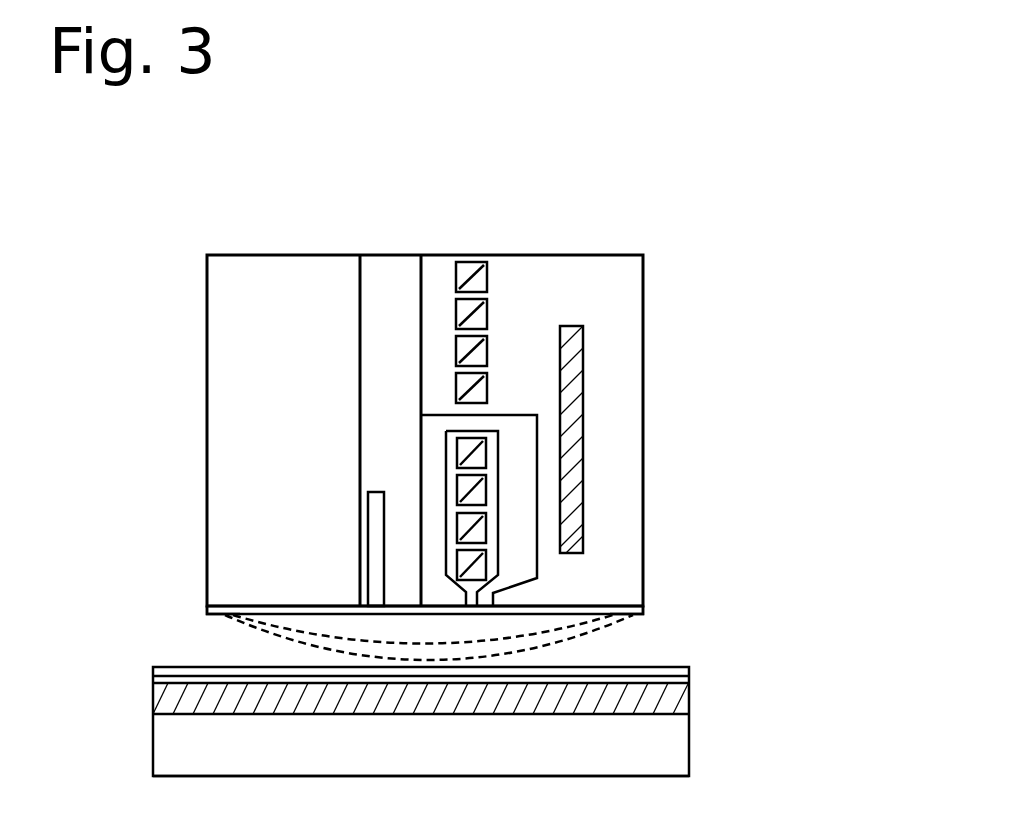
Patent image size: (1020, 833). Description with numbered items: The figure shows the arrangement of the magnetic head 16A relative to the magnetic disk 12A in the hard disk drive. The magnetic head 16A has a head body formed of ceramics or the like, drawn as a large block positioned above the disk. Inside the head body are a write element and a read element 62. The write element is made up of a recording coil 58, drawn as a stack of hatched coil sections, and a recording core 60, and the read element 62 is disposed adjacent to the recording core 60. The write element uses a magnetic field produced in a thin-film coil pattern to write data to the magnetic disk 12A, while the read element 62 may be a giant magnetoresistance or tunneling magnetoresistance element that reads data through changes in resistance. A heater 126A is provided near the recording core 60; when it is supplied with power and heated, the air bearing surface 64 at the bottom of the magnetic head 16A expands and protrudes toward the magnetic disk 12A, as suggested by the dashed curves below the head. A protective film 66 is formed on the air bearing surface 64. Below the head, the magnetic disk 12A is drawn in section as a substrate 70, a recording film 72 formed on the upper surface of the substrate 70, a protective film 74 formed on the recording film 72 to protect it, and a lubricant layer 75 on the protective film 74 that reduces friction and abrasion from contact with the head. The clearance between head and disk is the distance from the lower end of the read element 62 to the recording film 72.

The magnetic head 16A is at (625, 250).
The recording coil 58 is at (473, 262).
The recording core 60 is at (513, 413).
The heater 126A is at (583, 448).
The read element 62 is at (366, 546).
The protective film 66 is at (215, 617).
The air bearing surface 64 is at (647, 618).
The magnetic disk 12A is at (150, 746).
The lubricant layer 75 is at (691, 670).
The protective film 74 is at (691, 680).
The recording film 72 is at (691, 705).
The substrate 70 is at (691, 752).